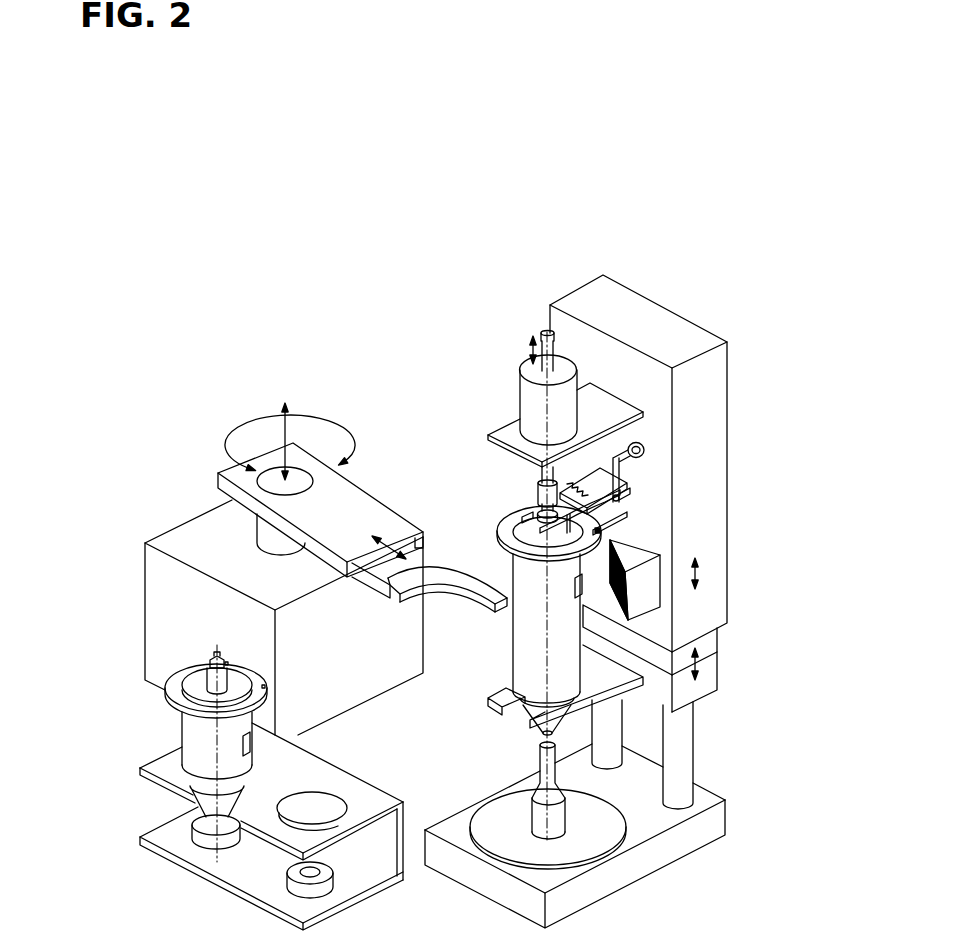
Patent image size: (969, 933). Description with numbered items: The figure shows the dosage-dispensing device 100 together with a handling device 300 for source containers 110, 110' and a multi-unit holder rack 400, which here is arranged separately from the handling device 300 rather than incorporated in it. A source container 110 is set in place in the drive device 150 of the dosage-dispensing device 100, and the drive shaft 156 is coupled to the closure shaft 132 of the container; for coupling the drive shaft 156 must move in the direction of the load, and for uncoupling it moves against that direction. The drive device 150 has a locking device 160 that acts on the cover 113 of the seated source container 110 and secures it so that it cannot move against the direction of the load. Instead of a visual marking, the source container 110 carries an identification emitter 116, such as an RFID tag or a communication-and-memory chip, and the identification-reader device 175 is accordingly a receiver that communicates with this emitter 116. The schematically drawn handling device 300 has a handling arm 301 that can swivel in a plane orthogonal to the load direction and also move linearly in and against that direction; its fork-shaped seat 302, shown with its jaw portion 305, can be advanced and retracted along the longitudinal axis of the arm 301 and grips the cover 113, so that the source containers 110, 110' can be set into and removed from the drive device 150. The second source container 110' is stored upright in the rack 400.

The dosage-dispensing device 100 is at (608, 540).
The source container 110 is at (654, 620).
The source container 110' is at (145, 747).
The cover 113 is at (195, 680).
The identification emitter 116 is at (580, 585).
The closure shaft 132 is at (533, 504).
The drive device 150 is at (697, 462).
The drive shaft 156 is at (537, 492).
The locking device 160 is at (603, 503).
The identification-reader device 175 is at (645, 587).
The handling device 300 is at (264, 508).
The handling arm 301 is at (263, 463).
The fork-shaped seat 302 is at (410, 558).
The fork holder 305 is at (427, 567).
The multi-unit holder rack 400 is at (173, 833).